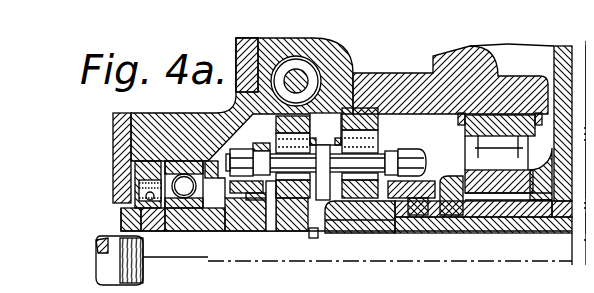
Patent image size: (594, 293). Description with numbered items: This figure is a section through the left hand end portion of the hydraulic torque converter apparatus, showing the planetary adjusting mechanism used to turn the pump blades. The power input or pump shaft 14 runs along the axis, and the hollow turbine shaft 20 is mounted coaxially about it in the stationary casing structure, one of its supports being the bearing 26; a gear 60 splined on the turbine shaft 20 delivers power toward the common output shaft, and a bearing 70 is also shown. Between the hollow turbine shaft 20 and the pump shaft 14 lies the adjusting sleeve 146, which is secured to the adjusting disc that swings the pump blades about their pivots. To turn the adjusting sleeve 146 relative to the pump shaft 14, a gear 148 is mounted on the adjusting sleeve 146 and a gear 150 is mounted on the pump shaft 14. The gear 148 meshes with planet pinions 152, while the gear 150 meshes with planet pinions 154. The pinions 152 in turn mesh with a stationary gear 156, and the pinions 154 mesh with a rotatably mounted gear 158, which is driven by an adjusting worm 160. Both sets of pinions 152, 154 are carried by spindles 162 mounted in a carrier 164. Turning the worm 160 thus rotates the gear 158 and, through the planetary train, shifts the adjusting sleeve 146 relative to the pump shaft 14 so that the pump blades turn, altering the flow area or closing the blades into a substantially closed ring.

The pump shaft 14 is at (399, 257).
The hollow turbine shaft 20 is at (516, 200).
The bearing 26 is at (472, 143).
The gear 60 is at (547, 140).
The bearing 70 is at (553, 208).
The adjusting sleeve 146 is at (456, 222).
The gear 148 is at (357, 205).
The gear 150 is at (285, 217).
The planet pinions 152 is at (372, 136).
The planet pinions 154 is at (270, 135).
The stationary gear 156 is at (368, 106).
The rotatably mounted gear 158 is at (316, 78).
The adjusting worm 160 is at (300, 60).
The spindles 162 is at (304, 153).
The carrier 164 is at (398, 148).